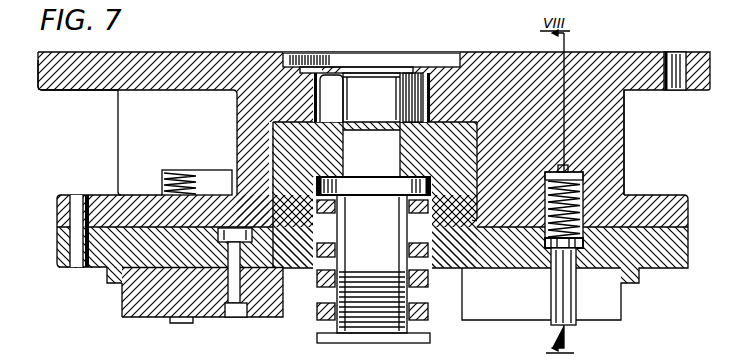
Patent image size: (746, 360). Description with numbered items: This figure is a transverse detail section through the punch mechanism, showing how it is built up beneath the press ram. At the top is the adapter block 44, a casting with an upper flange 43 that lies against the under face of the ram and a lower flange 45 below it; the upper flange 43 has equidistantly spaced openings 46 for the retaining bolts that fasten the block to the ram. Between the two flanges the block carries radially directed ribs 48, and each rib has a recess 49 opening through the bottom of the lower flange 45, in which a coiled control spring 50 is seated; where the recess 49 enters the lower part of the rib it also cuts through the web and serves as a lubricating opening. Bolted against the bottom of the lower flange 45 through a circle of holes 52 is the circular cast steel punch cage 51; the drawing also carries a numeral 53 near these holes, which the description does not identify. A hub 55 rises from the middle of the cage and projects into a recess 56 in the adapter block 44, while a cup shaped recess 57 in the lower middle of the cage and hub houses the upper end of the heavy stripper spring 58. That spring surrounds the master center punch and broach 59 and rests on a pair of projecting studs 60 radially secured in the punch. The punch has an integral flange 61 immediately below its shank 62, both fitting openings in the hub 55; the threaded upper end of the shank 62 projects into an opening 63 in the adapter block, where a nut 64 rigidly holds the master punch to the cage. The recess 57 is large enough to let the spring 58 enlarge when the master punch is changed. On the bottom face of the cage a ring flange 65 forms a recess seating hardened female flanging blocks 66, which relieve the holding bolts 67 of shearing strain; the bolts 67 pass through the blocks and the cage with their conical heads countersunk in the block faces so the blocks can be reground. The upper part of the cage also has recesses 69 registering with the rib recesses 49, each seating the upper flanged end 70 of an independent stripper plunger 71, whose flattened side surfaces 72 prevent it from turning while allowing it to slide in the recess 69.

The upper flange 43 is at (70, 78).
The adapter block 44 is at (237, 109).
The lower flange 45 is at (57, 205).
The openings 46 is at (684, 80).
The ribs 48 is at (128, 131).
The recess 49 is at (210, 180).
The control spring 50 is at (182, 172).
The punch cage 51 is at (107, 262).
The holes 52 is at (70, 244).
The bore 53 is at (80, 195).
The hub 55 is at (477, 130).
The recess 56 is at (478, 147).
The cup shaped recess 57 is at (477, 217).
The stripper spring 58 is at (316, 287).
The master center punch and broach 59 is at (372, 264).
The projecting studs 60 is at (395, 215).
The flange 61 is at (374, 194).
The shank 62 is at (372, 125).
The opening 63 is at (340, 62).
The nut 64 is at (415, 87).
The ring flange 65 is at (107, 285).
The female flanging blocks 66 is at (140, 318).
The holding bolts 67 is at (228, 250).
The recesses 69 is at (684, 208).
The upper flanged end 70 is at (580, 250).
The stripper plunger 71 is at (551, 297).
The flattened side surfaces 72 is at (568, 328).